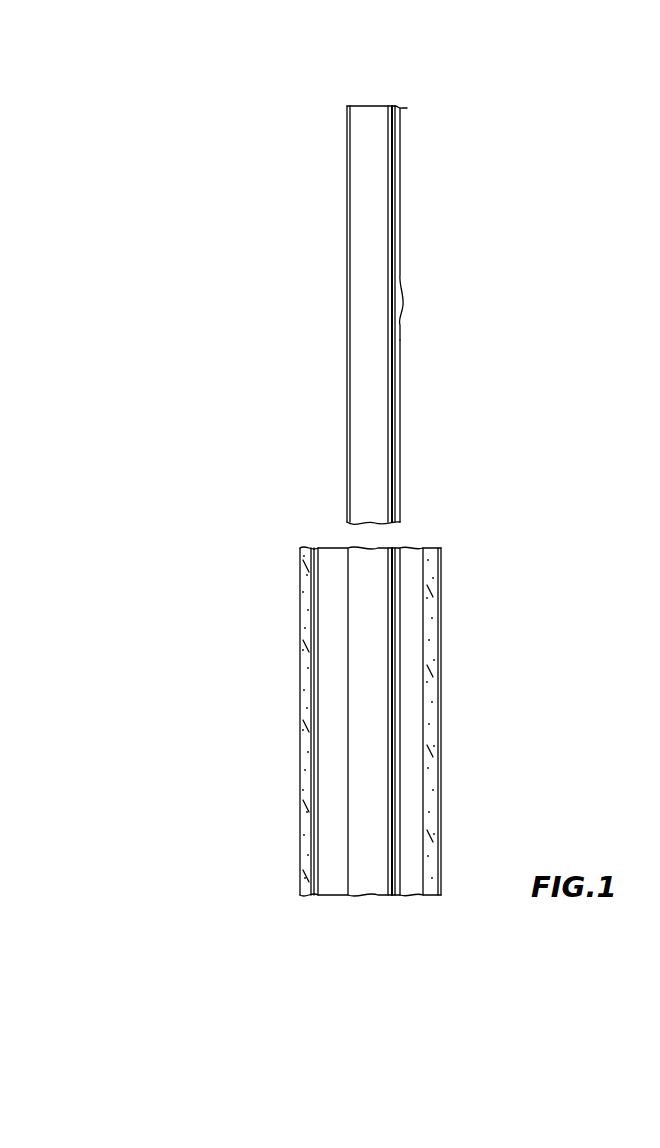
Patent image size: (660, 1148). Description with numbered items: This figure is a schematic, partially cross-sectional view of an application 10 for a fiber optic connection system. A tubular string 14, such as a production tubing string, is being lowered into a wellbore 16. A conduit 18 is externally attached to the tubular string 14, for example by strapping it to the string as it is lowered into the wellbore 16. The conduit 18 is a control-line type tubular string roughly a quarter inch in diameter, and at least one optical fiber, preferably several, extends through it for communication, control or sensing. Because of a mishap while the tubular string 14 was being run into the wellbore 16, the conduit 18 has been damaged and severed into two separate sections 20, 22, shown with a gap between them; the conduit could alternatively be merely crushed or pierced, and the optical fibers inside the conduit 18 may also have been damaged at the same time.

The application 10 is at (492, 178).
The tubular string 14 is at (347, 441).
The wellbore 16 is at (312, 793).
The conduit 18 is at (402, 760).
The first conduit section 20 is at (401, 260).
The second conduit section 22 is at (401, 378).